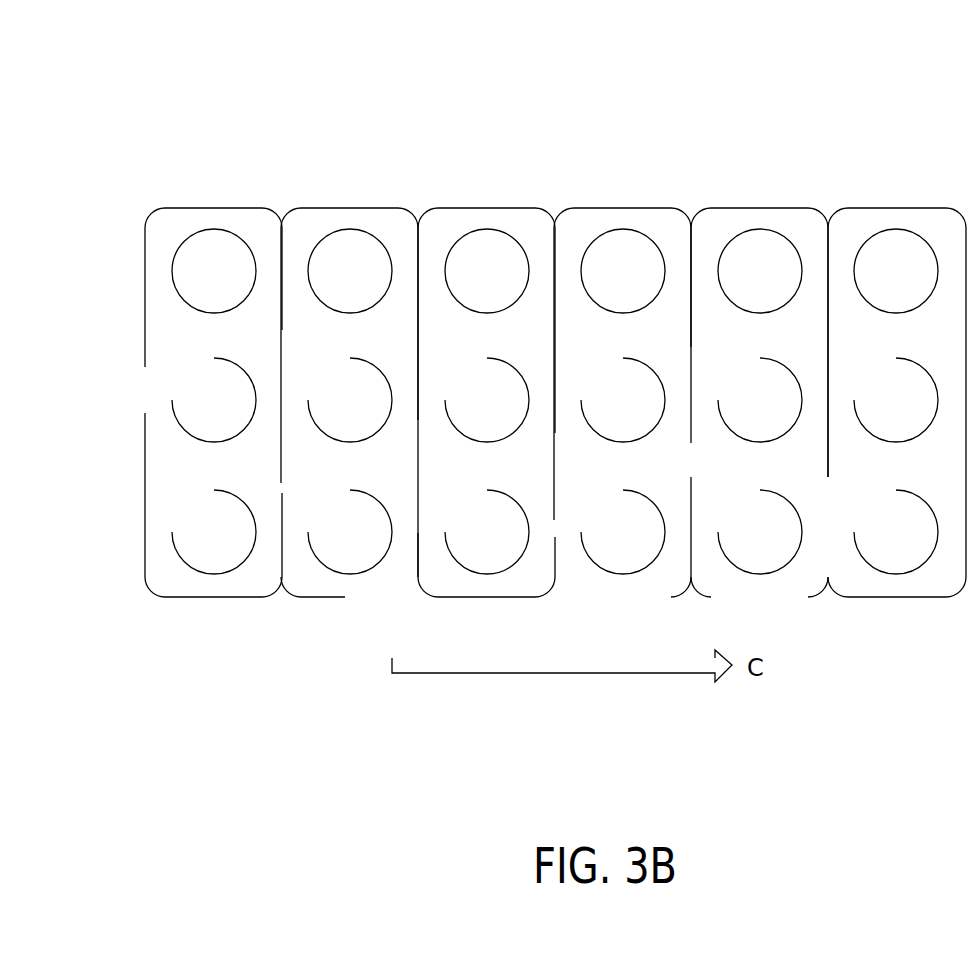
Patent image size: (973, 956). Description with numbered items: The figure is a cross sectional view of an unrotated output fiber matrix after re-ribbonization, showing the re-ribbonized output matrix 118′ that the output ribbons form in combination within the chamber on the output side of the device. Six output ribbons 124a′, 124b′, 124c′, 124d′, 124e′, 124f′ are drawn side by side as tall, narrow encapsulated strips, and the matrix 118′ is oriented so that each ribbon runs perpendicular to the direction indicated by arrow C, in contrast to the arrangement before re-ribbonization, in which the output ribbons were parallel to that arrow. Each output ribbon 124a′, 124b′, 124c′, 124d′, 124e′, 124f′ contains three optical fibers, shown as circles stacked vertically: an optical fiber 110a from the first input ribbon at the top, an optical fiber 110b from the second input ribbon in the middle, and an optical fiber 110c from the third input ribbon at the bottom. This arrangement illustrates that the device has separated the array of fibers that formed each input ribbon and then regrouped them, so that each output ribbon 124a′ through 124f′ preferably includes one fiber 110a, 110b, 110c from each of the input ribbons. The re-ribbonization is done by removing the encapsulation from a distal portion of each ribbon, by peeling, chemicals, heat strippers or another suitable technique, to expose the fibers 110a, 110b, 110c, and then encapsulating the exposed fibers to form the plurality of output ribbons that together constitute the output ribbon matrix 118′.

The re-ribbonized output matrix 118′ is at (127, 46).
The output ribbon 124a′ is at (253, 216).
The output ribbon 124b′ is at (402, 218).
The output ribbon 124c′ is at (527, 222).
The output ribbon 124d′ is at (644, 210).
The output ribbon 124e′ is at (797, 218).
The output ribbon 124f′ is at (942, 218).
The optical fiber 110a is at (555, 271).
The optical fiber 110b is at (555, 400).
The optical fiber 110c is at (555, 532).